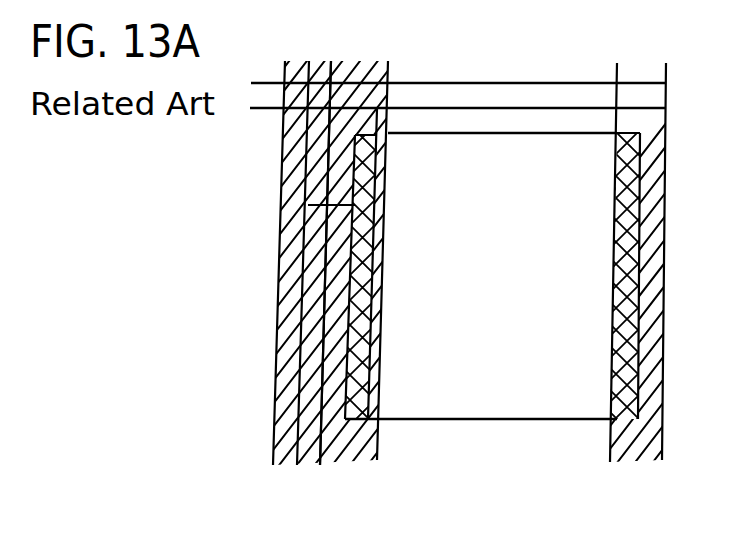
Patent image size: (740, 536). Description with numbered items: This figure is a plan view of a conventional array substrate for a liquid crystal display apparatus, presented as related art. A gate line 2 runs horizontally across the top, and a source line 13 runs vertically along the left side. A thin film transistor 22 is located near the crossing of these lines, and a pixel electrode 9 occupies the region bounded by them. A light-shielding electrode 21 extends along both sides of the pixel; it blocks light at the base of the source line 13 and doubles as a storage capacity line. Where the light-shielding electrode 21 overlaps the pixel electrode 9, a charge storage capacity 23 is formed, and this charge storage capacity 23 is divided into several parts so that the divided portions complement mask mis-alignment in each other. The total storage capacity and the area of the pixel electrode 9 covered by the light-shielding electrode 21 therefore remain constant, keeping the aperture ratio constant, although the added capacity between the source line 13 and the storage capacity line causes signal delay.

The gate line 2 is at (490, 96).
The pixel electrode 9 is at (512, 420).
The source line 13 is at (310, 455).
The light-shielding electrode 21 is at (348, 450).
The thin film transistor 22 is at (340, 172).
The charge storage capacity 23 is at (375, 303).